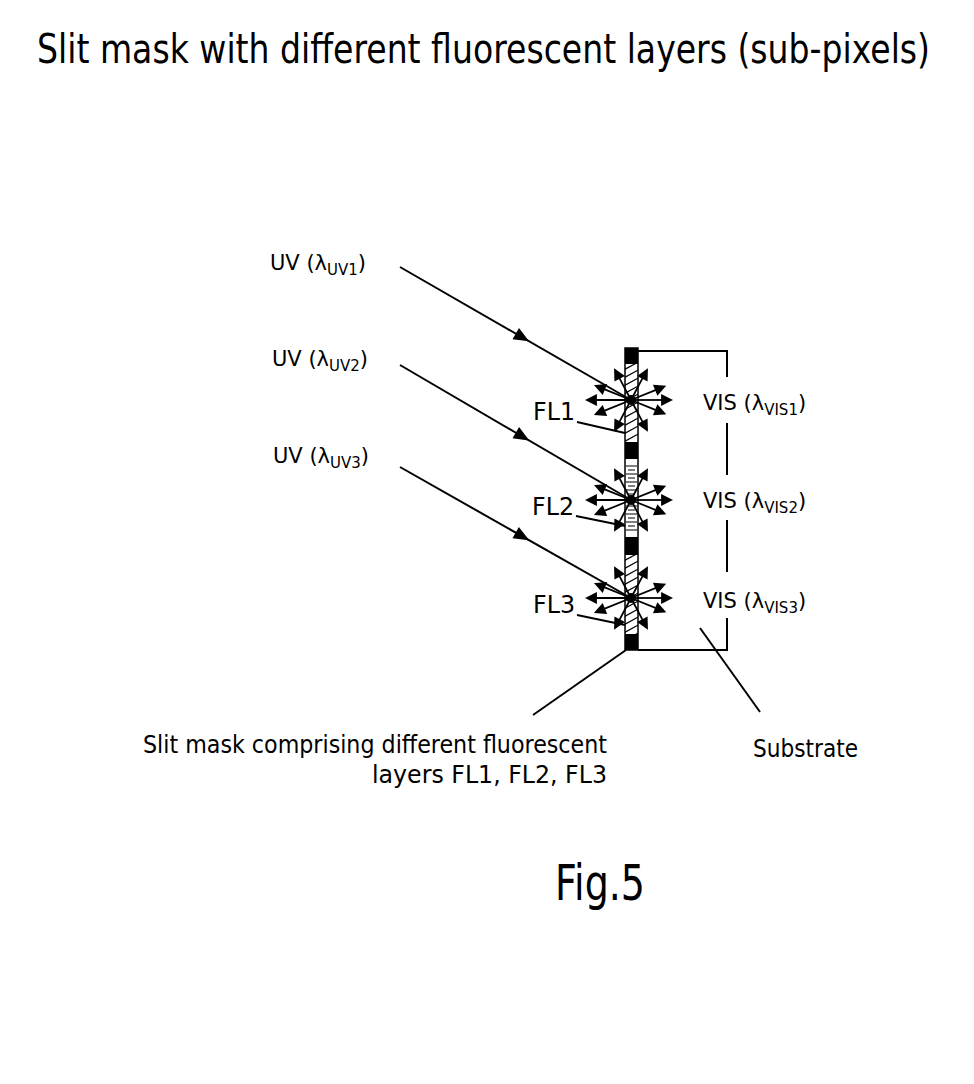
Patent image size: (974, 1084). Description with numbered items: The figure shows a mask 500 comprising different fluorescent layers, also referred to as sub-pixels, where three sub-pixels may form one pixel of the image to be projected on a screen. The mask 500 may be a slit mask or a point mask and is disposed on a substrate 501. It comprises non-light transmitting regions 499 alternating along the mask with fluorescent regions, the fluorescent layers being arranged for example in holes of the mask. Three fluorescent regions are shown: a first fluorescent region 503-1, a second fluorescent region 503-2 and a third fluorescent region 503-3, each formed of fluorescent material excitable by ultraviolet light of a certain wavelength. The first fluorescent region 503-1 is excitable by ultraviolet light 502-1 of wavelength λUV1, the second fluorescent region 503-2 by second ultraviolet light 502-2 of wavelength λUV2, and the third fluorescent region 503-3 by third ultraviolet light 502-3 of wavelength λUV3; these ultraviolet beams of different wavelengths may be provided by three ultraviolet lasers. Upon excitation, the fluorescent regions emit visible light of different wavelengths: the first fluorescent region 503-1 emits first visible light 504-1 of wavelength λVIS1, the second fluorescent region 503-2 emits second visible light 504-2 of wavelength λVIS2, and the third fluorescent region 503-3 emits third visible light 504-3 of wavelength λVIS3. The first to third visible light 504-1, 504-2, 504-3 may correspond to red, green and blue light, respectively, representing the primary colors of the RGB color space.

The non-light transmitting regions 499 is at (625, 356).
The mask 500 is at (657, 297).
The substrate 501 is at (727, 634).
The ultraviolet light 502-1 is at (457, 296).
The second ultraviolet light 502-2 is at (457, 396).
The third ultraviolet light 502-3 is at (457, 497).
The first fluorescent region 503-1 is at (640, 385).
The second fluorescent region 503-2 is at (638, 540).
The third fluorescent region 503-3 is at (638, 633).
The first visible light 504-1 is at (638, 412).
The second visible light 504-2 is at (640, 473).
The third visible light 504-3 is at (640, 572).